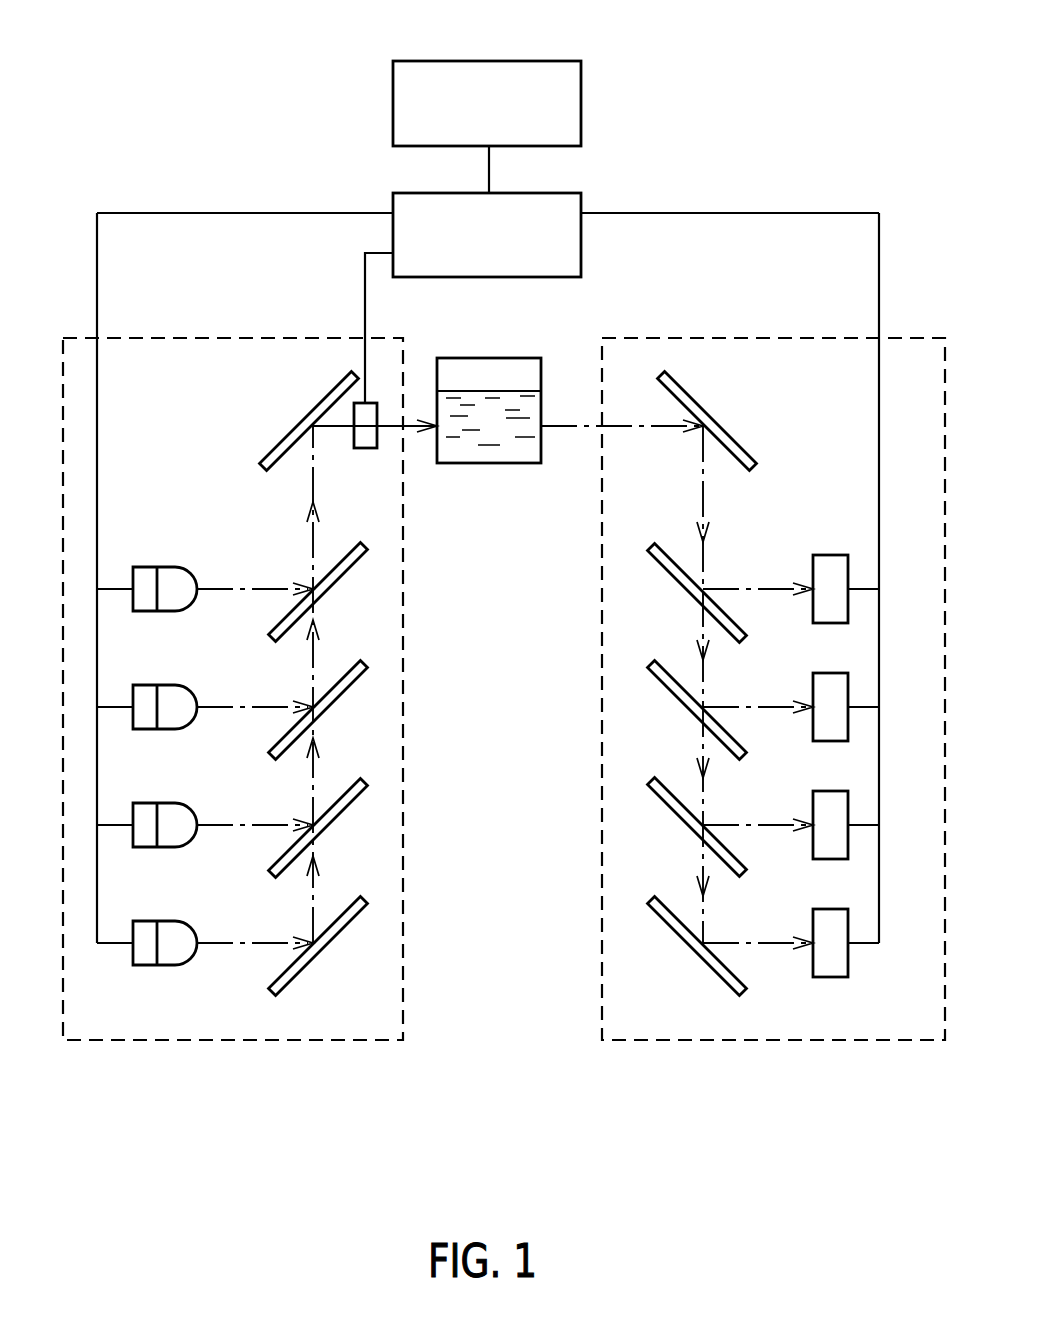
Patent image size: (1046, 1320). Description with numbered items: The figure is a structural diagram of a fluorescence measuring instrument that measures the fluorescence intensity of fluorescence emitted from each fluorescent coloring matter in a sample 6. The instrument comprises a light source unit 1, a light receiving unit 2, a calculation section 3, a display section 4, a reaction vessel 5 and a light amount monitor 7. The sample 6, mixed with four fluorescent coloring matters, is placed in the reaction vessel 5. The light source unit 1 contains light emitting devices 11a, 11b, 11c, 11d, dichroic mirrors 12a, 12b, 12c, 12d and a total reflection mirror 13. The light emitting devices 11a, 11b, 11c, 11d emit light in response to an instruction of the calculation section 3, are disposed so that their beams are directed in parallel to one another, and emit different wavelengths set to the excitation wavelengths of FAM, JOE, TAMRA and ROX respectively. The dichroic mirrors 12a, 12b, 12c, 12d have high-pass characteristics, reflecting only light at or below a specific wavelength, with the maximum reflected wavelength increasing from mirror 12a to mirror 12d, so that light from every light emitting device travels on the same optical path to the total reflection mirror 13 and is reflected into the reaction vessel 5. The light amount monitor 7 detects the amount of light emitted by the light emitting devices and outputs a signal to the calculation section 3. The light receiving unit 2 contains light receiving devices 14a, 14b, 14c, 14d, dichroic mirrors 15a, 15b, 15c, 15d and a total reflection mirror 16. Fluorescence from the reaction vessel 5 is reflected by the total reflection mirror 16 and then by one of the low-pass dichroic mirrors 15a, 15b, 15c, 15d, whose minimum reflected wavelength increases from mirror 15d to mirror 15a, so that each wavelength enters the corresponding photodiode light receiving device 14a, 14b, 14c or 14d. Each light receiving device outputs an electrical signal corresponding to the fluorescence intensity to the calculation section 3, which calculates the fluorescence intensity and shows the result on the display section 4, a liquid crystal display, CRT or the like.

The light source unit 1 is at (232, 1043).
The light receiving unit 2 is at (795, 1043).
The calculation section 3 is at (583, 197).
The display section 4 is at (583, 83).
The reaction vessel 5 is at (535, 354).
The sample 6 is at (535, 408).
The light amount monitor 7 is at (378, 448).
The light emitting device 11a is at (183, 566).
The light emitting device 11b is at (183, 684).
The light emitting device 11c is at (183, 802).
The light emitting device 11d is at (183, 920).
The dichroic mirror 12a is at (333, 562).
The dichroic mirror 12b is at (333, 680).
The dichroic mirror 12c is at (333, 798).
The dichroic mirror 12d is at (333, 916).
The total reflection mirror 13 is at (283, 438).
The light receiving device 14a is at (812, 572).
The light receiving device 14b is at (812, 690).
The light receiving device 14c is at (812, 808).
The light receiving device 14d is at (812, 926).
The dichroic mirror 15a is at (684, 560).
The dichroic mirror 15b is at (684, 678).
The dichroic mirror 15c is at (684, 796).
The dichroic mirror 15d is at (684, 914).
The total reflection mirror 16 is at (737, 436).